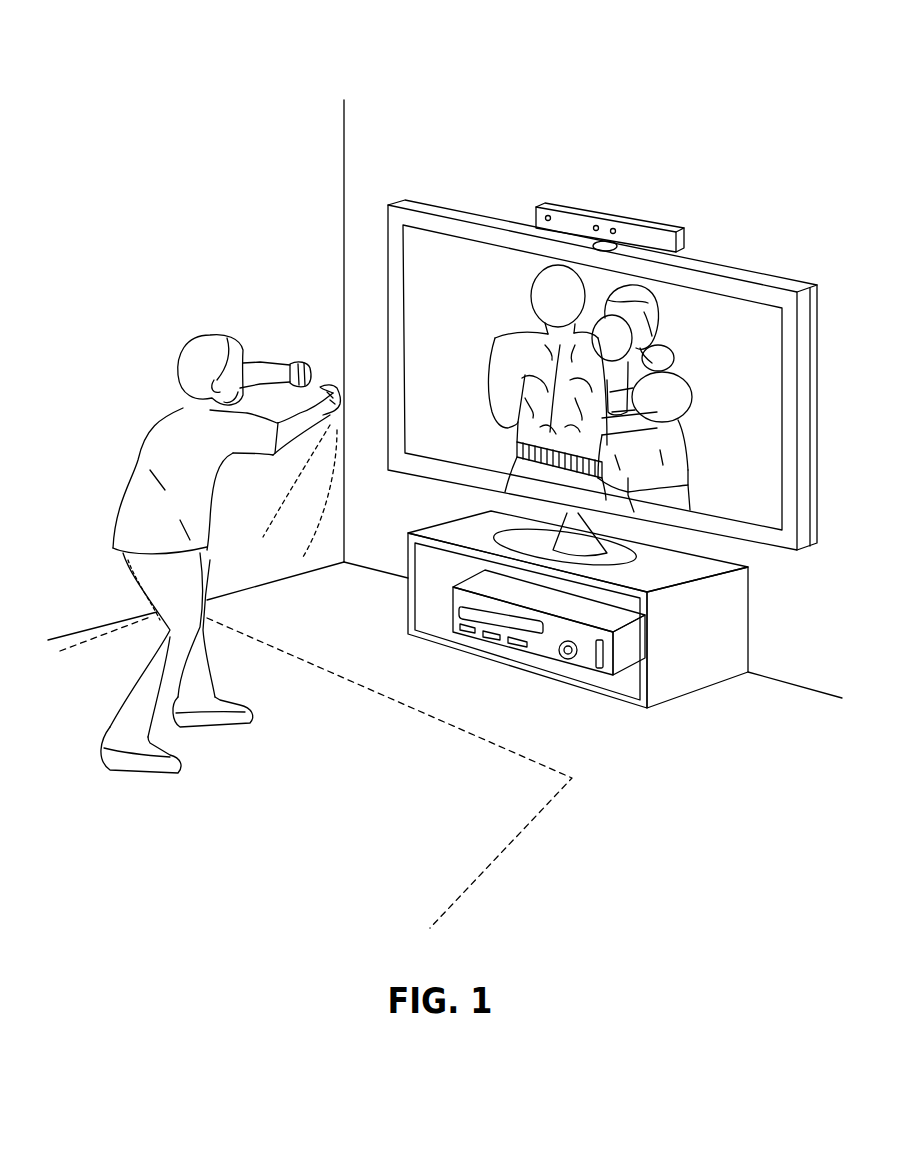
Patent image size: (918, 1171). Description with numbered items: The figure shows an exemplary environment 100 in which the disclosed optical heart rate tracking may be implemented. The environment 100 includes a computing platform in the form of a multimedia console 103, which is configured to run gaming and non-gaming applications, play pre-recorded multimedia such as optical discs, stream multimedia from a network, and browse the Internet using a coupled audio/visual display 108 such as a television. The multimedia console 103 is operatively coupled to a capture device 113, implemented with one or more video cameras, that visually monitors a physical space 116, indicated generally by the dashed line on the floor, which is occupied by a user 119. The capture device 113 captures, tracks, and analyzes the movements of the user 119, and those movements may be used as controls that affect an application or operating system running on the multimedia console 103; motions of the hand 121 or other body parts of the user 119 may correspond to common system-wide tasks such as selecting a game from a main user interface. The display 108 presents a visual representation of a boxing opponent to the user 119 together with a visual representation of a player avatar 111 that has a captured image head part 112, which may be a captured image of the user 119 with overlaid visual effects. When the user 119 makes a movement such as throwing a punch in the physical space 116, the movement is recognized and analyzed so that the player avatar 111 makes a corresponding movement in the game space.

The environment 100 is at (448, 33).
The multimedia console 103 is at (543, 645).
The audio/visual display 108 is at (387, 245).
The player avatar 111 is at (708, 408).
The captured image head part 112 is at (652, 311).
The capture device 113 is at (573, 218).
The physical space 116 is at (475, 873).
The user 119 is at (118, 300).
The hand 121 is at (283, 365).